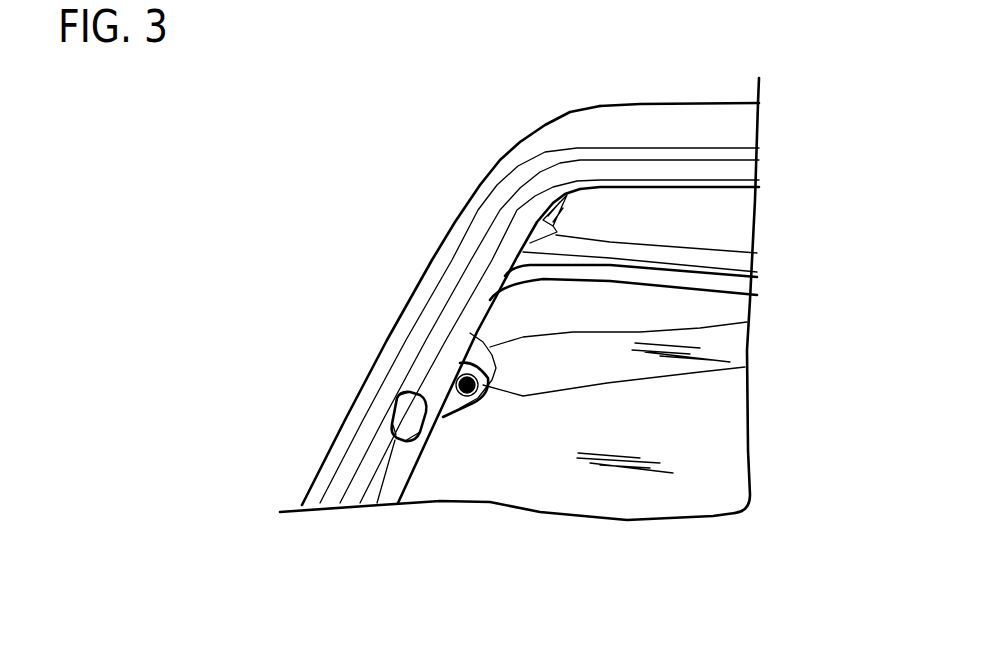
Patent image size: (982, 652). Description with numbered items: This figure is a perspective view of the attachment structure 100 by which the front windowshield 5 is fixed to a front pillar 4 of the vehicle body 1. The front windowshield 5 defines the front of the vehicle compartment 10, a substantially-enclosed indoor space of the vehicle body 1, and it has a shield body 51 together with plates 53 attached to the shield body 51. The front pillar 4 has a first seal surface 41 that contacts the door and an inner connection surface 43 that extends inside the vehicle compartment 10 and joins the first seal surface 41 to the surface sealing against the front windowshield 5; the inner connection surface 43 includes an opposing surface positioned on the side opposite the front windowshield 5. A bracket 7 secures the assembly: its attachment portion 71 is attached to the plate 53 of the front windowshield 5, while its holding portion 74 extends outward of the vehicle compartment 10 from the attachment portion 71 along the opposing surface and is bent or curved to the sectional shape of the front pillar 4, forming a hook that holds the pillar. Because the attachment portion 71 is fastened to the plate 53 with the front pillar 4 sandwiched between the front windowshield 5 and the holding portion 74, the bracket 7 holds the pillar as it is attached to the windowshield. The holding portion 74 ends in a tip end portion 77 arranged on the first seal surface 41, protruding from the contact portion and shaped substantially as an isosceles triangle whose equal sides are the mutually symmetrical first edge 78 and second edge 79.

The attachment structure 100 is at (353, 173).
The vehicle body 1 is at (656, 95).
The vehicle compartment 10 is at (598, 107).
The front pillar 4 is at (425, 268).
The first seal surface 41 is at (463, 286).
The inner connection surface 43 is at (467, 320).
The front windowshield 5 is at (712, 410).
The shield body 51 is at (712, 457).
The plate 53 is at (747, 322).
The bracket 7 is at (432, 445).
The attachment portion 71 is at (745, 367).
The holding portion 74 is at (407, 437).
The tip end portion 77 is at (397, 405).
The first edge 78 is at (402, 393).
The second edge 79 is at (395, 428).